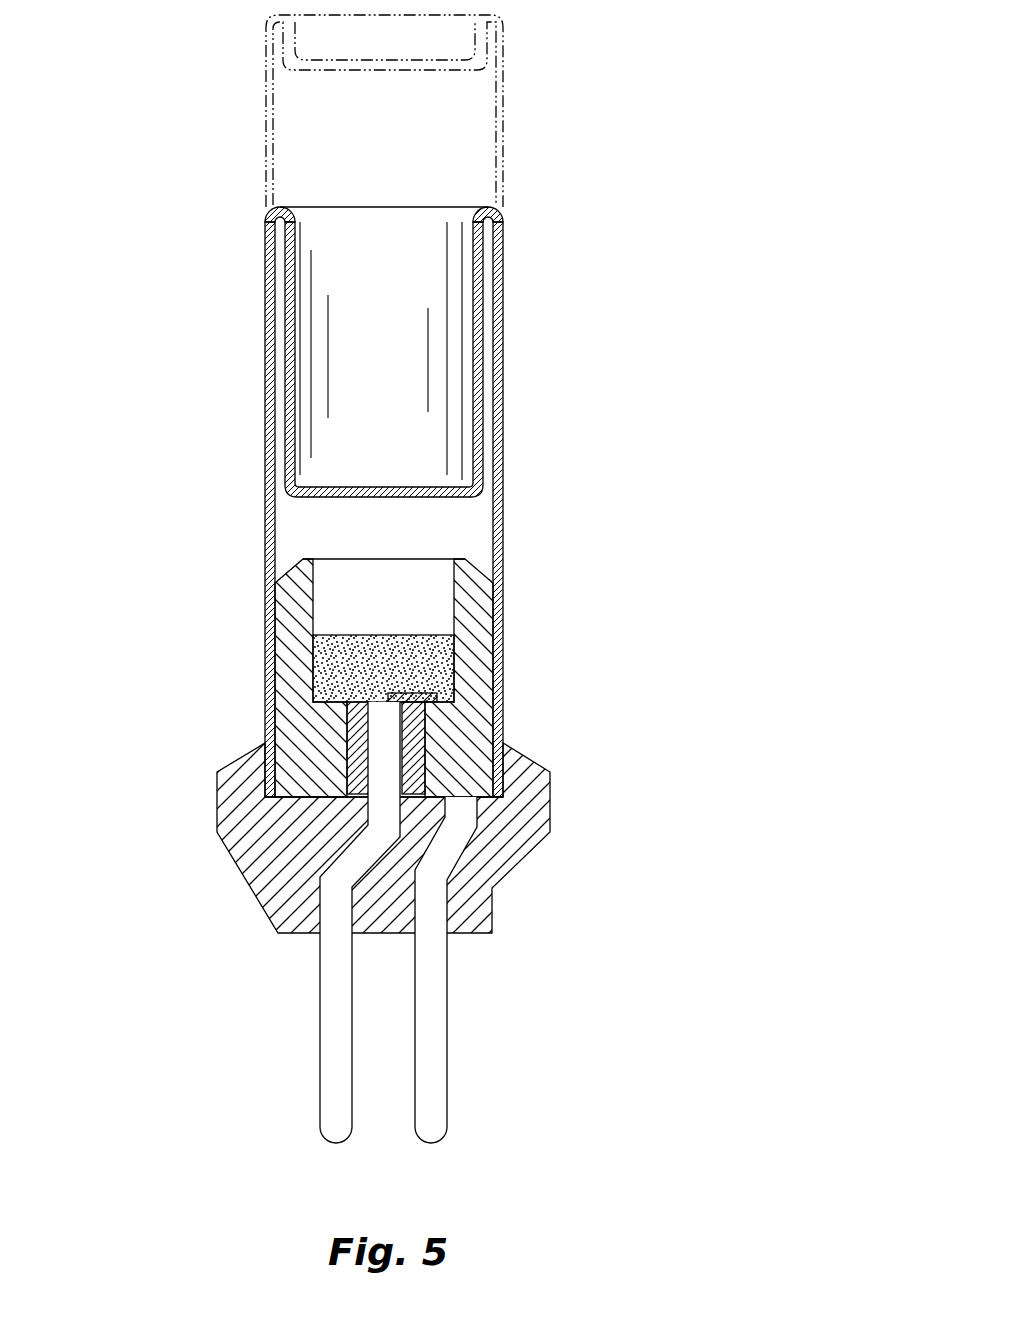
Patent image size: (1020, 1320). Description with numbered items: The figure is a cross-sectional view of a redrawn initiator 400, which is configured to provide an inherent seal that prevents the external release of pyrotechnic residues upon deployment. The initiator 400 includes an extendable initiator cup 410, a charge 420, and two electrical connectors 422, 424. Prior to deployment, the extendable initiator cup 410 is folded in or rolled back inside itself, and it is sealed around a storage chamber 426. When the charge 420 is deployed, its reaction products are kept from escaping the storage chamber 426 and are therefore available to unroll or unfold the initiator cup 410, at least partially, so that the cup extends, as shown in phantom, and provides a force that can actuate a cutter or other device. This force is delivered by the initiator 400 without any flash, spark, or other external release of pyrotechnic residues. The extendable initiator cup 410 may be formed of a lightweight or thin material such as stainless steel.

The initiator 400 is at (581, 108).
The extendable initiator cup 410 is at (503, 348).
The charge 420 is at (422, 655).
The electrical connector 422 is at (433, 1031).
The electrical connector 424 is at (337, 1031).
The storage chamber 426 is at (466, 533).